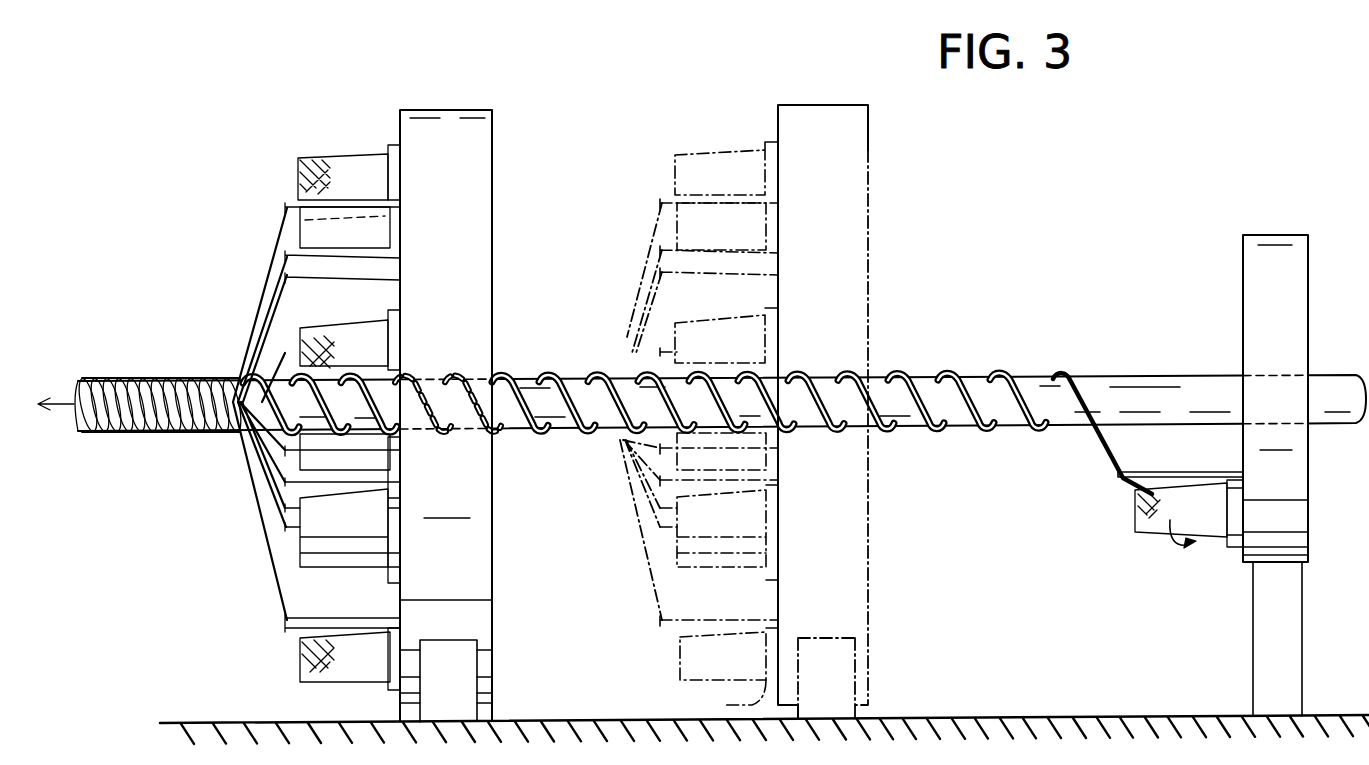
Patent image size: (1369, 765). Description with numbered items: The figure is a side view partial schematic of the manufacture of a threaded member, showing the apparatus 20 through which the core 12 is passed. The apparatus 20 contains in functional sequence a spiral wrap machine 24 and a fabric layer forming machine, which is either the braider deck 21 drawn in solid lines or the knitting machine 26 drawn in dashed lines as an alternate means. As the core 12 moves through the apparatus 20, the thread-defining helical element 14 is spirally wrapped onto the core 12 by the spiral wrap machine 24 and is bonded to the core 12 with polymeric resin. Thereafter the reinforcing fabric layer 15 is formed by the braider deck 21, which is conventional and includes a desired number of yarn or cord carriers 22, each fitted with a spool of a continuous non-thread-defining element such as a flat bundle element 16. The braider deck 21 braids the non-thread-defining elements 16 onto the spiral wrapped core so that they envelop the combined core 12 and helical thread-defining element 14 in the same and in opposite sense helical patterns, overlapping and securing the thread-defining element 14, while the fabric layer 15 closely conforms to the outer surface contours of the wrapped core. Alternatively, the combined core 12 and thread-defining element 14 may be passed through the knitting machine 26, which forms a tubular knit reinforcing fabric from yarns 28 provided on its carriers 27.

The core 12 is at (1035, 385).
The thread-defining helical element 14 is at (1106, 448).
The reinforcing fabric layer 15 is at (177, 378).
The non-thread-defining element 16 is at (263, 305).
The apparatus 20 is at (615, 84).
The braider deck 21 is at (435, 110).
The carriers 22 is at (392, 200).
The spiral wrap machine 24 is at (1274, 235).
The knitting machine 26 is at (818, 108).
The carriers 27 is at (765, 195).
The yarns 28 is at (635, 300).